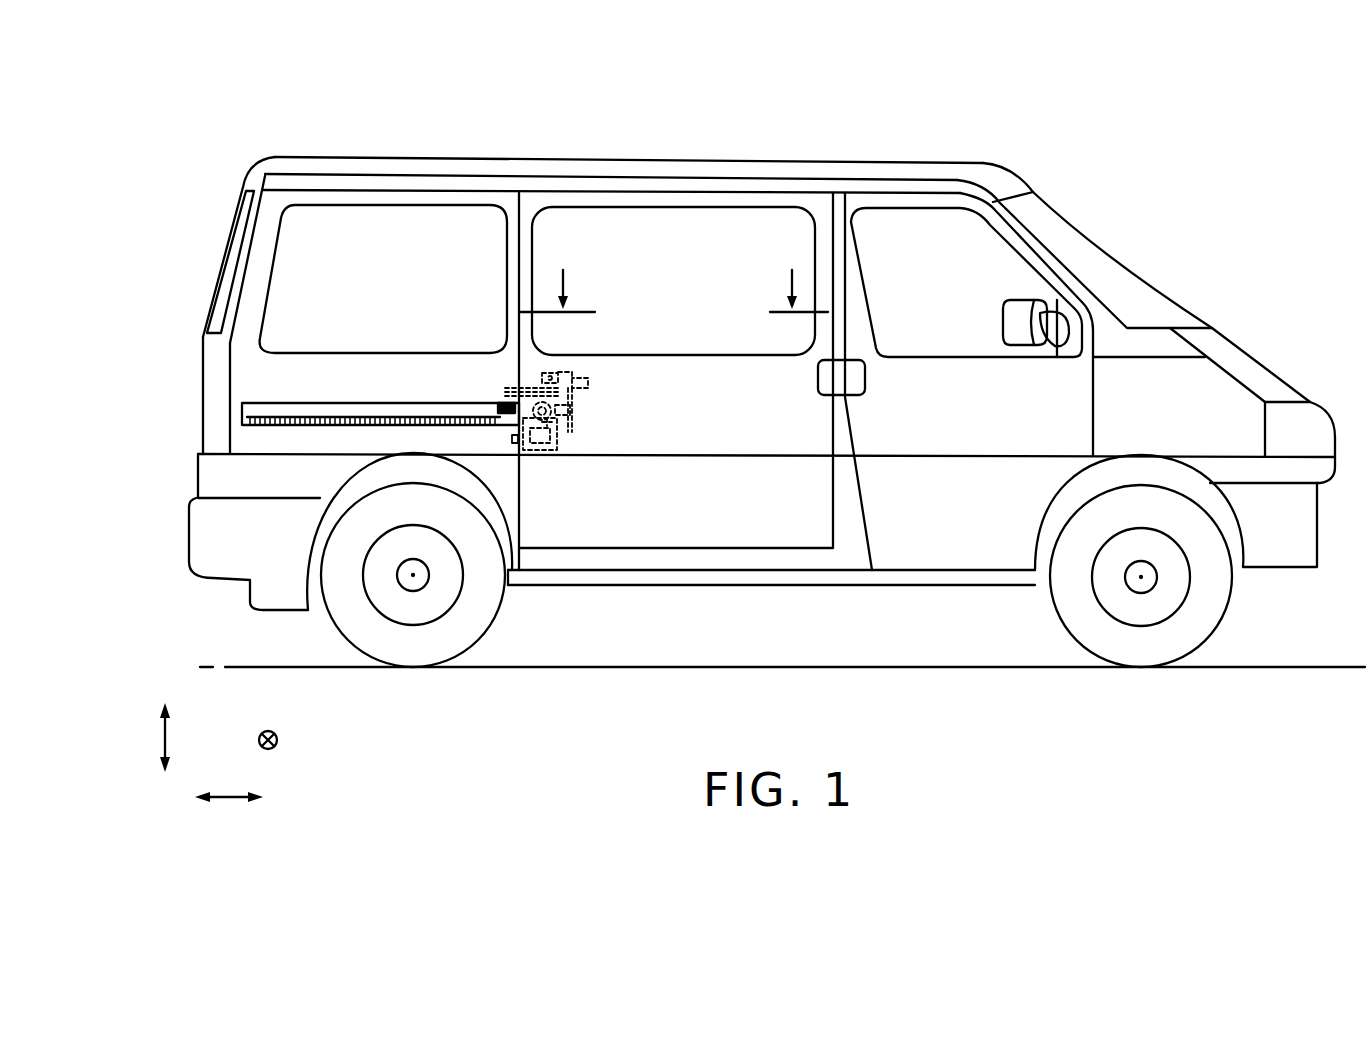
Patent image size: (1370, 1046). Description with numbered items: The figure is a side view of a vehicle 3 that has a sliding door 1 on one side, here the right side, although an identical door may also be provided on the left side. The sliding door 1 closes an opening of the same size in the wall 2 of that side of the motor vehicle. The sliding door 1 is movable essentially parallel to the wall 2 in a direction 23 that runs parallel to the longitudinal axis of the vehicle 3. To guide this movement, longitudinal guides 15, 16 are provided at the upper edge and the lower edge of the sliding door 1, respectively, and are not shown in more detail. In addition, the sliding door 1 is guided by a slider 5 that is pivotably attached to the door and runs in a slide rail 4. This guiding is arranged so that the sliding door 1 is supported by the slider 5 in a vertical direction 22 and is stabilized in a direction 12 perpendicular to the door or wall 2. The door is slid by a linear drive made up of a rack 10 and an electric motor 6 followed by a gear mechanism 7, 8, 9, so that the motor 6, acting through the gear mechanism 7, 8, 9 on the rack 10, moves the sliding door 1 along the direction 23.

The sliding door 1 is at (790, 413).
The wall 2 is at (510, 507).
The vehicle 3 is at (1150, 134).
The slide rail 4 is at (265, 407).
The slider 5 is at (500, 403).
The electric motor 6 is at (563, 427).
The gear mechanism 7 is at (556, 415).
The gear mechanism 8 is at (540, 434).
The gear mechanism 9 is at (515, 422).
The rack 10 is at (287, 420).
The direction perpendicular to the sliding door 12 is at (277, 746).
The longitudinal guide 15 is at (672, 190).
The longitudinal guide 16 is at (745, 548).
The vertical direction 22 is at (163, 738).
The direction parallel to the longitudinal axis 23 is at (228, 797).